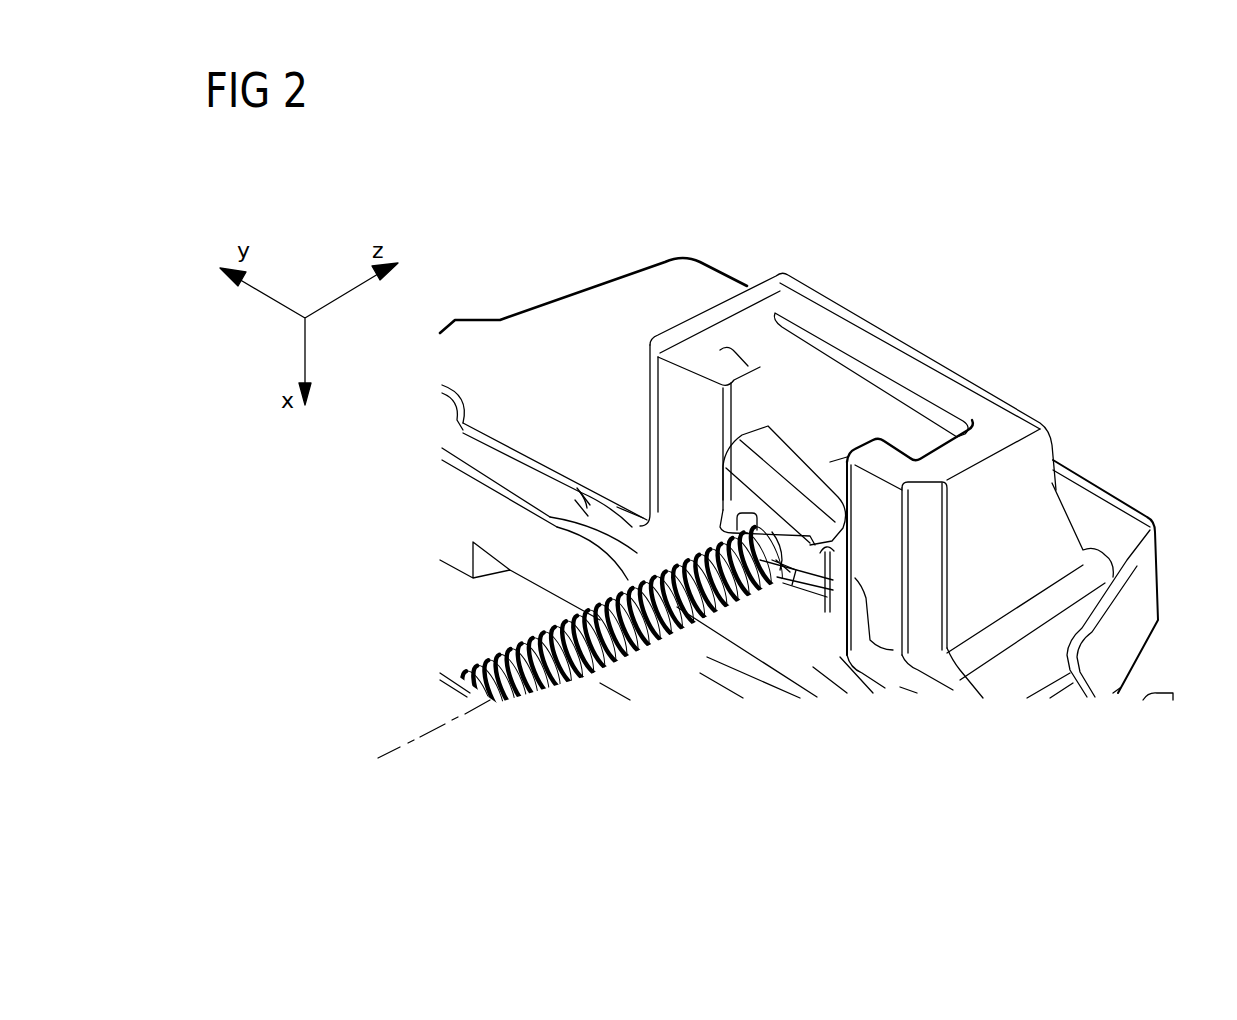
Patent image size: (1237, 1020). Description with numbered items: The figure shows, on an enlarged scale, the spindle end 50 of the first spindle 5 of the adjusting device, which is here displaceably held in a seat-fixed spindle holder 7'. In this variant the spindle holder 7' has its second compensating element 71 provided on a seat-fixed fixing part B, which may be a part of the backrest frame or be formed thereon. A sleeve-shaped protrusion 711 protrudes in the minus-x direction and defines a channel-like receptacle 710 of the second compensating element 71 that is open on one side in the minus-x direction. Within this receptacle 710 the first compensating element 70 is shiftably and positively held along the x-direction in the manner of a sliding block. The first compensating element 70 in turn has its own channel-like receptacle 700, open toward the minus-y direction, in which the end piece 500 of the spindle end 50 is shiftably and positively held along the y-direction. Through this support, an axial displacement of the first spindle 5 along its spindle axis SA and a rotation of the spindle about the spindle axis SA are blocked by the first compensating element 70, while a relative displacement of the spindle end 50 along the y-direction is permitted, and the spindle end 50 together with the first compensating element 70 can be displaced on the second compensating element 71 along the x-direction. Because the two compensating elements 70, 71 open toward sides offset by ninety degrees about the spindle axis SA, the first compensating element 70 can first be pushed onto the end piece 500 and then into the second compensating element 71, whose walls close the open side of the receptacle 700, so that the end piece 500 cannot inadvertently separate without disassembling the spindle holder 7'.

The spindle holder 7' is at (593, 244).
The seat-fixed fixing part B is at (675, 285).
The second compensating element 71 is at (920, 463).
The sleeve-shaped protrusion 711 is at (690, 395).
The channel-like receptacle 710 is at (893, 410).
The first compensating element 70 is at (765, 481).
The first spindle 5 is at (634, 596).
The spindle axis SA is at (425, 735).
The spindle end 50 is at (790, 585).
The channel-like receptacle 700 is at (833, 575).
The end piece 500 is at (850, 578).